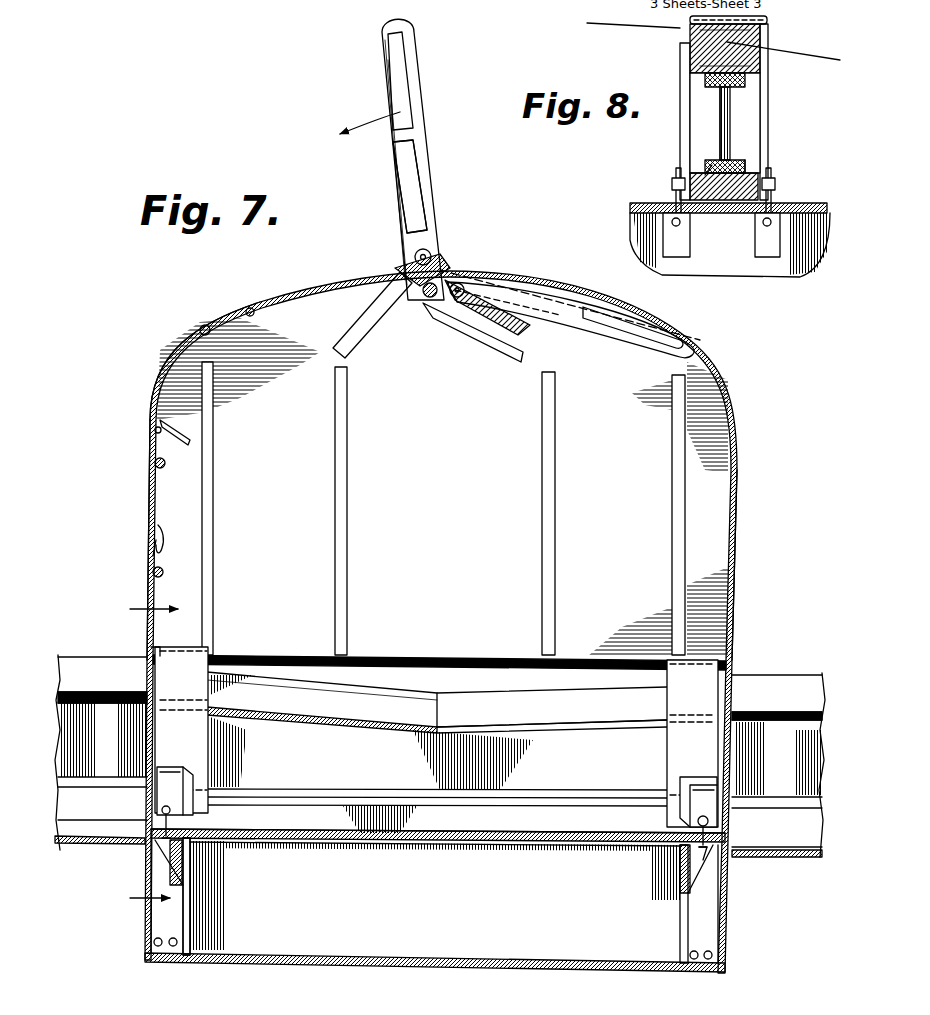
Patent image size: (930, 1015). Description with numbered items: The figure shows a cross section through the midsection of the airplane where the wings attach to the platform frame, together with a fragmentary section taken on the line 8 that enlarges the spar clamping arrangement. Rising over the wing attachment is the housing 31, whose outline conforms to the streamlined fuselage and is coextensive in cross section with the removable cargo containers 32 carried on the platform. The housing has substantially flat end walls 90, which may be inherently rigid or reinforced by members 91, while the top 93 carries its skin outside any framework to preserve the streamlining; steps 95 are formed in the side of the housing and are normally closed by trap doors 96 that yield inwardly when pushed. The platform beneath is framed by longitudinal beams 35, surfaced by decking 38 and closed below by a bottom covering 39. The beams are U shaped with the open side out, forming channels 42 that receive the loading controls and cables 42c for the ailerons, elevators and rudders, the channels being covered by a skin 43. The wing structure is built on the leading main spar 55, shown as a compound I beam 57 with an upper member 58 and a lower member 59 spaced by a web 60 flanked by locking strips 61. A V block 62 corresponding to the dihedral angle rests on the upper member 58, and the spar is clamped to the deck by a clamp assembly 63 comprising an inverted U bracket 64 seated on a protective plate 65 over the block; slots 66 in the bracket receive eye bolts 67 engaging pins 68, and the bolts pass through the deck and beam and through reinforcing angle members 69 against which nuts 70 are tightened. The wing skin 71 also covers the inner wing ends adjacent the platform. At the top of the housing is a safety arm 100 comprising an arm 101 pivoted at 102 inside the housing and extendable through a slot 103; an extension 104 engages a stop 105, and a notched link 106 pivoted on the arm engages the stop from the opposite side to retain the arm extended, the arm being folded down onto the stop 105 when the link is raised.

In FIG. 7, the section line 8 is at (157, 755).
In FIG. 7, the housing 31 is at (176, 339).
In FIG. 7, the removable cargo containers 32 is at (147, 490).
In FIG. 7, the longitudinal beams 35 is at (190, 930).
In FIG. 7, the decking 38 is at (285, 838).
In FIG. 7, the bottom covering 39 is at (300, 962).
In FIG. 7, the channels 42 is at (155, 873).
In FIG. 7, the loading controls and cables 42c is at (170, 958).
In FIG. 7, the skin 43 is at (148, 923).
In FIG. 7, the leading main spar 55 is at (462, 820).
In FIG. 8, the leading main spar 55 is at (750, 124).
In FIG. 7, the compound I beam 57 is at (595, 746).
In FIG. 8, the compound I beam 57 is at (718, 112).
In FIG. 7, the upper member 58 is at (487, 698).
In FIG. 8, the upper member 58 is at (750, 44).
In FIG. 7, the lower member 59 is at (412, 810).
In FIG. 8, the lower member 59 is at (680, 200).
In FIG. 8, the web 60 is at (718, 133).
In FIG. 7, the locking strips 61 is at (527, 722).
In FIG. 8, the locking strips 61 is at (747, 164).
In FIG. 7, the V block 62 is at (398, 672).
In FIG. 8, the V block 62 is at (753, 43).
In FIG. 8, the clamp assembly 63 is at (776, 182).
In FIG. 7, the inverted U bracket 64 is at (677, 745).
In FIG. 8, the inverted U bracket 64 is at (766, 75).
In FIG. 7, the plate 65 is at (210, 652).
In FIG. 8, the plate 65 is at (693, 21).
In FIG. 8, the slots 66 is at (678, 176).
In FIG. 7, the eye bolts 67 is at (170, 832).
In FIG. 8, the eye bolts 67 is at (677, 203).
In FIG. 7, the pins 68 is at (163, 810).
In FIG. 8, the pins 68 is at (708, 168).
In FIG. 7, the reinforcing angle members 69 is at (700, 870).
In FIG. 8, the reinforcing angle members 69 is at (684, 243).
In FIG. 7, the nuts 70 is at (693, 862).
In FIG. 8, the nuts 70 is at (760, 228).
In FIG. 7, the skin 71 is at (106, 660).
In FIG. 7, the end walls 90 is at (730, 525).
In FIG. 7, the reinforcing members 91 is at (348, 532).
In FIG. 7, the top 93 is at (335, 283).
In FIG. 7, the steps 95 is at (163, 572).
In FIG. 7, the trap doors 96 is at (150, 548).
In FIG. 7, the safety arm 100 is at (437, 160).
In FIG. 7, the arm 101 is at (430, 218).
In FIG. 7, the pivot 102 is at (377, 315).
In FIG. 7, the slot 103 is at (390, 275).
In FIG. 7, the extension 104 is at (482, 337).
In FIG. 7, the stop 105 is at (512, 340).
In FIG. 7, the link 106 is at (440, 268).